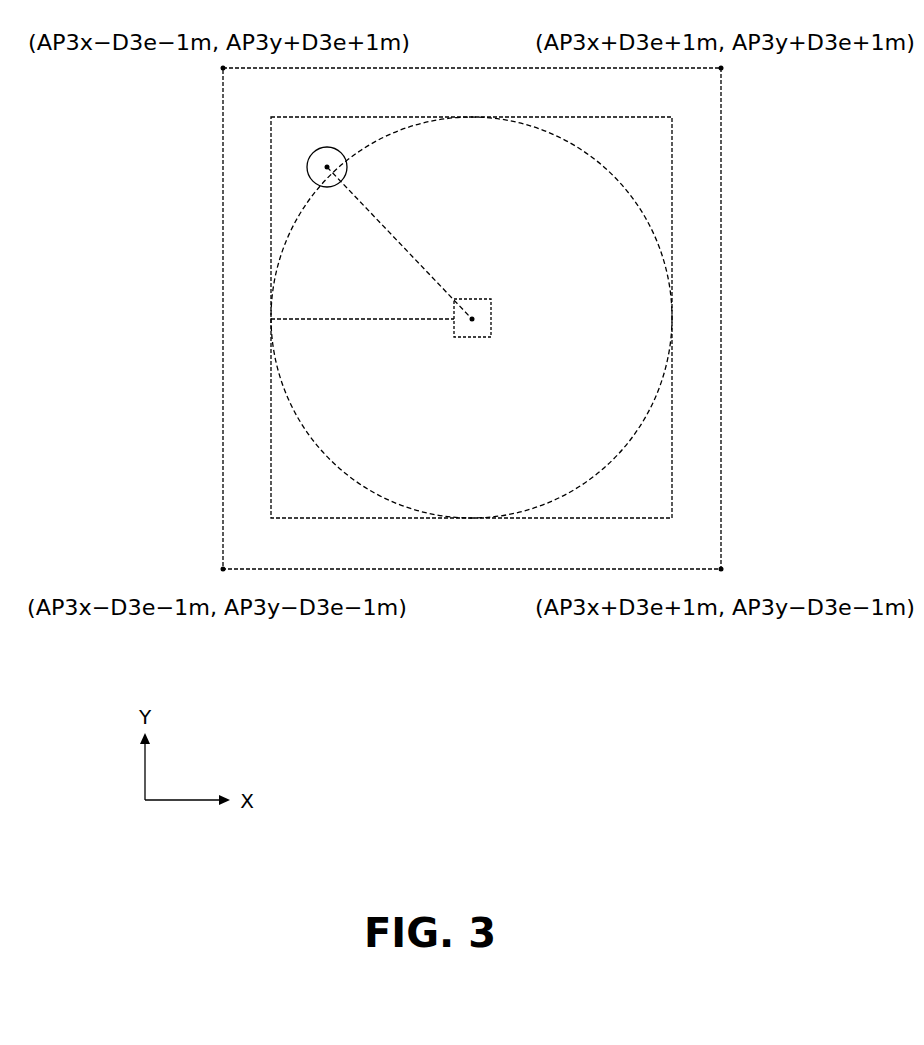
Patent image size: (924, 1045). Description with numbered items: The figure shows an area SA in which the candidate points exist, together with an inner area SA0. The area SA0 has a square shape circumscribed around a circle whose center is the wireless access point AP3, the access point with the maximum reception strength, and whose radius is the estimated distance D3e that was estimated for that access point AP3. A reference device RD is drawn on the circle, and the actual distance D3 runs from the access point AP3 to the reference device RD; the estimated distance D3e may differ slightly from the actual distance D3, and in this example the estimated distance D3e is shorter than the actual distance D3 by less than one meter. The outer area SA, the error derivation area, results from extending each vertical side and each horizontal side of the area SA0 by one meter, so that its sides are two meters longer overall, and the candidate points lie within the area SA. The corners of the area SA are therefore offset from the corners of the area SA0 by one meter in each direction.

The area SA is at (466, 572).
The area SA0 is at (543, 520).
The reference device RD is at (330, 185).
The actual distance D3 is at (399, 243).
The estimated distance D3e is at (362, 335).
The wireless access point AP3 is at (472, 337).